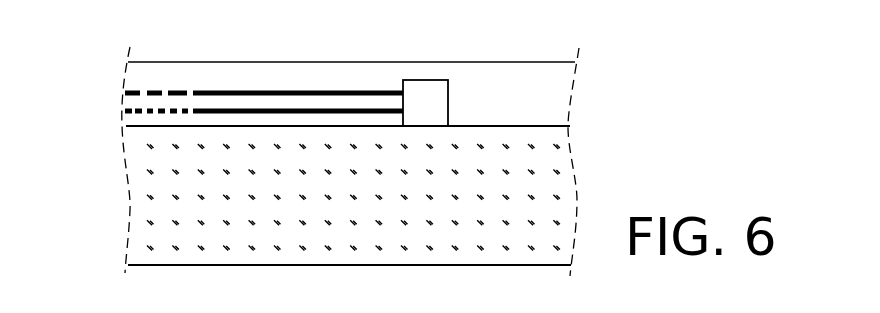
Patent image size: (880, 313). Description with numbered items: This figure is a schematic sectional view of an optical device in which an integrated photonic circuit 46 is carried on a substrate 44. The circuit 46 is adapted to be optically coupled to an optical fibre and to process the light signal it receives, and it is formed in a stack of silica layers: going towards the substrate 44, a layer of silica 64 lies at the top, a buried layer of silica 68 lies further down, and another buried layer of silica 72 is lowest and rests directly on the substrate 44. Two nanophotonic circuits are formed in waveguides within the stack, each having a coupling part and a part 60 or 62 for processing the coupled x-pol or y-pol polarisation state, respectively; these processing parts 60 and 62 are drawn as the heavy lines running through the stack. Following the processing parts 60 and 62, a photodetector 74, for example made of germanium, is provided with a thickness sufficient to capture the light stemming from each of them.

The substrate 44 is at (150, 211).
The integrated photonic circuit 46 is at (120, 104).
The processing part 60 is at (177, 85).
The processing part 62 is at (147, 104).
The layer of silica 64 is at (270, 77).
The buried layer of silica 68 is at (312, 100).
The buried layer of silica 72 is at (355, 118).
The photodetector 74 is at (425, 90).